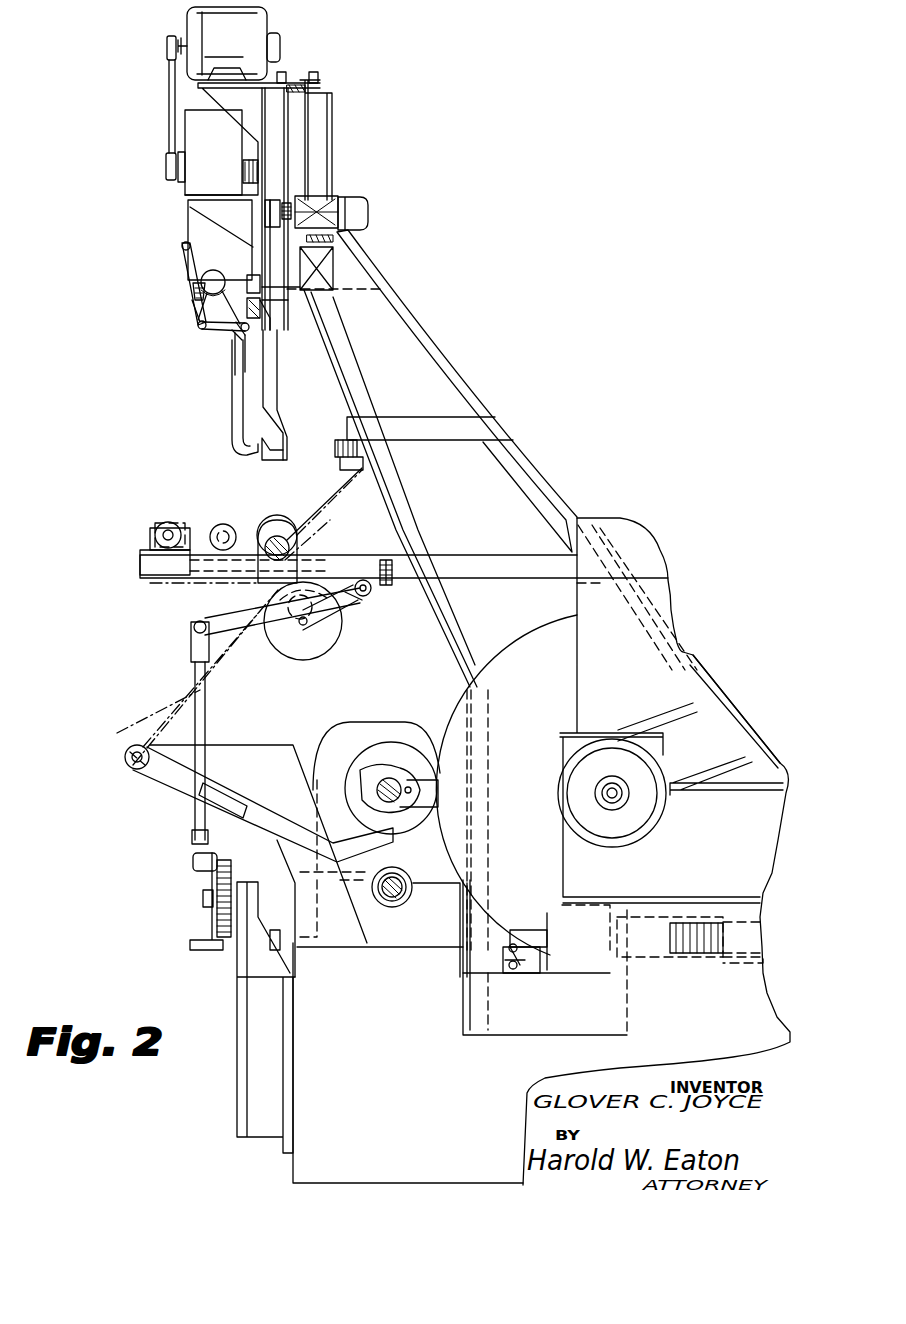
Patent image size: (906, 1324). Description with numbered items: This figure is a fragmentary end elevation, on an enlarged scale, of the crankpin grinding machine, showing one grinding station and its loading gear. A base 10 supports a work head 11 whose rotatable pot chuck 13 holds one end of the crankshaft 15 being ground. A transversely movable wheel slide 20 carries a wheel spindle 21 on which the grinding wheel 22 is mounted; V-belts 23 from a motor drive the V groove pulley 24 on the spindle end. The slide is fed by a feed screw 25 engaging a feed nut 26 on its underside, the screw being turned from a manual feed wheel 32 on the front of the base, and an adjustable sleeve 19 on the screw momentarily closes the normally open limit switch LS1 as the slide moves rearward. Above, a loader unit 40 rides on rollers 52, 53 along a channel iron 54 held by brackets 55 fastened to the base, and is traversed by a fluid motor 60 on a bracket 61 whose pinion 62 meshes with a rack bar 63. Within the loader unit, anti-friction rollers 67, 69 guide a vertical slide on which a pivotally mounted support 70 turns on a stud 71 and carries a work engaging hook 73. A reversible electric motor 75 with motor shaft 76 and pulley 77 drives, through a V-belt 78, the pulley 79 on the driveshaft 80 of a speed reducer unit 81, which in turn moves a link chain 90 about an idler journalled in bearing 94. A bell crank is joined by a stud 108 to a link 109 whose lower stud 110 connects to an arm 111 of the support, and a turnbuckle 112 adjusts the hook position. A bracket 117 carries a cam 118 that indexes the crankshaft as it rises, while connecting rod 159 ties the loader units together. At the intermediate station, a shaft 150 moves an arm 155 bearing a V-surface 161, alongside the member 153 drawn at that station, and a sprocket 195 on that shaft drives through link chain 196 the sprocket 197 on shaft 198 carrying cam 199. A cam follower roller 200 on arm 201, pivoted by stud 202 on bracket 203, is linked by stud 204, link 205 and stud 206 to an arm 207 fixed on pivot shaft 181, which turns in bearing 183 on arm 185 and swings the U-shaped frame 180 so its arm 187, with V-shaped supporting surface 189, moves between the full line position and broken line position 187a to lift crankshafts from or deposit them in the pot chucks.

The base 10 is at (308, 1162).
The work head 11 is at (340, 735).
The pot chuck 13 is at (400, 725).
The crankshaft 15 is at (285, 528).
The adjustable sleeve 19 is at (547, 935).
The wheel slide 20 is at (758, 870).
The wheel spindle 21 is at (623, 787).
The grinding wheel 22 is at (530, 655).
The V-belts 23 is at (720, 793).
The V groove pulley 24 is at (635, 815).
The feed screw 25 is at (690, 957).
The feed nut 26 is at (747, 967).
The feed wheel 32 is at (200, 921).
The loader unit 40 is at (180, 221).
The roller 52 is at (270, 200).
The roller 53 is at (260, 306).
The channel iron 54 is at (258, 267).
The bracket 55 is at (408, 319).
The fluid motor 60 is at (368, 203).
The bracket 61 is at (333, 287).
The pinion 62 is at (338, 196).
The rack bar 63 is at (290, 200).
The anti-friction roller 67 is at (243, 161).
The anti-friction roller 69 is at (265, 325).
The pivotally mounted support 70 is at (236, 345).
The stud 71 is at (233, 332).
The work engaging hook 73 is at (232, 405).
The reversible electric motor 75 is at (240, 26).
The motor shaft 76 is at (182, 42).
The pulley 77 is at (166, 45).
The V-belt 78 is at (170, 97).
The pulley 79 is at (166, 170).
The driveshaft 80 is at (183, 172).
The speed reducer unit 81 is at (213, 152).
The link chain 90 is at (208, 272).
The bearing 94 is at (192, 302).
The stud 108 is at (182, 250).
The link 109 is at (184, 262).
The stud 110 is at (198, 330).
The arm 111 is at (215, 334).
The turnbuckle 112 is at (192, 290).
The bracket 117 is at (288, 408).
The cam 118 is at (270, 455).
The shaft 150 is at (200, 526).
The bar 153 is at (404, 566).
The arm 155 is at (270, 518).
The connecting rod 159 is at (330, 522).
The V-surface 161 is at (303, 545).
The U-shaped frame 180 is at (235, 785).
The pivot shaft 181 is at (133, 768).
The bearing 183 is at (125, 758).
The arm 185 is at (257, 760).
The arm 187 is at (265, 823).
The broken line position 187a is at (245, 700).
The V-shaped supporting surface 189 is at (375, 860).
The sprocket 195 is at (230, 520).
The link chain 196 is at (248, 584).
The sprocket 197 is at (262, 617).
The shaft 198 is at (295, 650).
The cam 199 is at (325, 645).
The cam follower roller 200 is at (345, 612).
The arm 201 is at (340, 597).
The stud 202 is at (372, 590).
The bracket 203 is at (375, 557).
The stud 204 is at (194, 627).
The link 205 is at (191, 655).
The stud 206 is at (195, 825).
The arm 207 is at (185, 800).
The limit switch LS1 is at (520, 987).